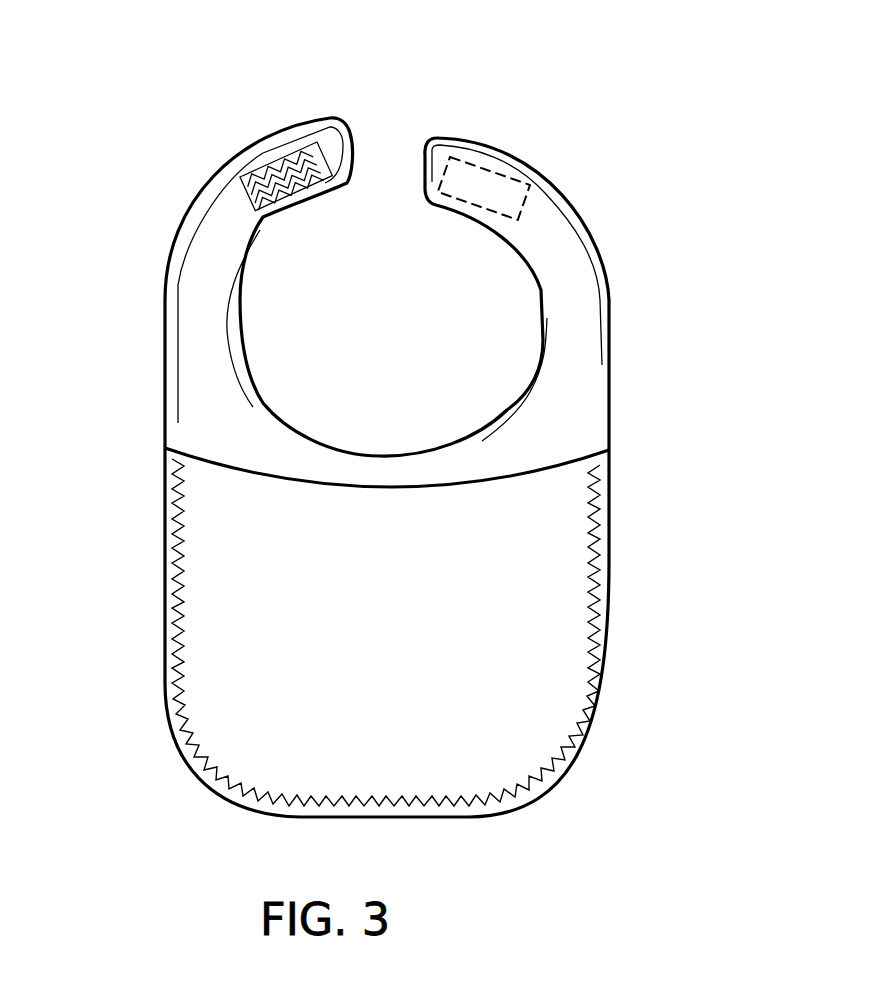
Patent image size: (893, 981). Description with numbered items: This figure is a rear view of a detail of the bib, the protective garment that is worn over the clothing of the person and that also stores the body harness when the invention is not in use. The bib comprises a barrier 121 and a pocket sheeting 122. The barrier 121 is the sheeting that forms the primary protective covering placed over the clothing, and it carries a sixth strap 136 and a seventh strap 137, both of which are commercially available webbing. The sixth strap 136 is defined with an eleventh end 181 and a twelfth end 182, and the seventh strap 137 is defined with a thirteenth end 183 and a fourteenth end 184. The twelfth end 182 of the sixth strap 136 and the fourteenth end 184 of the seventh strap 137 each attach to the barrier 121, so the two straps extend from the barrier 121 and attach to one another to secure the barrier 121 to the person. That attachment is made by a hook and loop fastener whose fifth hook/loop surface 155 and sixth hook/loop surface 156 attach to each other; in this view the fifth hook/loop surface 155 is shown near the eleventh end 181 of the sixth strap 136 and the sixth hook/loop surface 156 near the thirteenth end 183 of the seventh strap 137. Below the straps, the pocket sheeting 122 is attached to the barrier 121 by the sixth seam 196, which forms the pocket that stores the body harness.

The barrier 121 is at (583, 420).
The pocket sheeting 122 is at (538, 537).
The sixth seam 196 is at (547, 767).
The fourteenth end 184 is at (197, 325).
The thirteenth end 183 is at (340, 121).
The sixth hook/loop surface 156 is at (298, 167).
The eleventh end 181 is at (423, 143).
The fifth hook/loop surface 155 is at (483, 183).
The sixth strap 136 is at (567, 262).
The seventh strap 137 is at (220, 281).
The twelfth end 182 is at (583, 353).